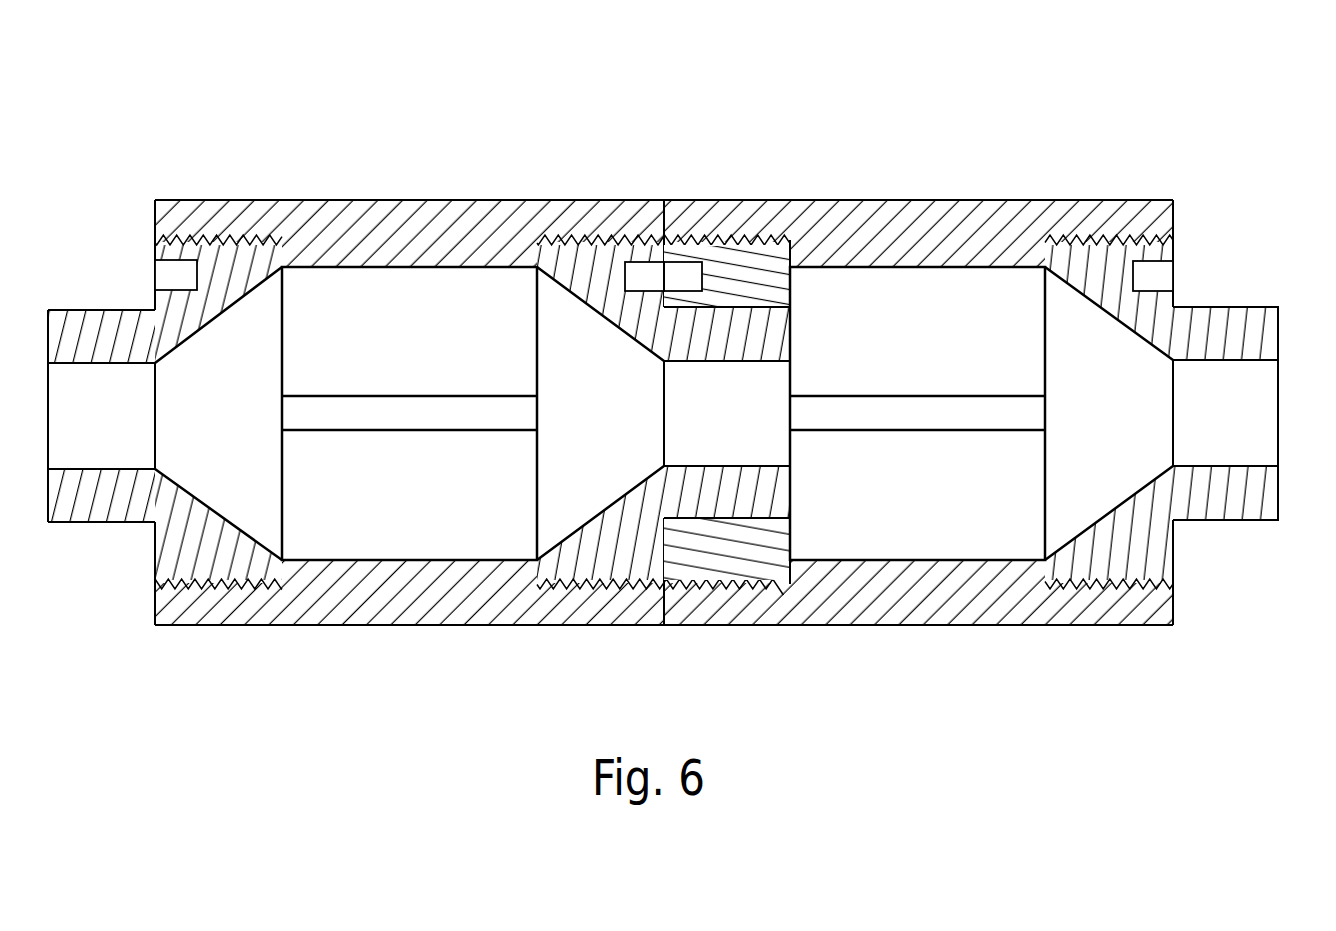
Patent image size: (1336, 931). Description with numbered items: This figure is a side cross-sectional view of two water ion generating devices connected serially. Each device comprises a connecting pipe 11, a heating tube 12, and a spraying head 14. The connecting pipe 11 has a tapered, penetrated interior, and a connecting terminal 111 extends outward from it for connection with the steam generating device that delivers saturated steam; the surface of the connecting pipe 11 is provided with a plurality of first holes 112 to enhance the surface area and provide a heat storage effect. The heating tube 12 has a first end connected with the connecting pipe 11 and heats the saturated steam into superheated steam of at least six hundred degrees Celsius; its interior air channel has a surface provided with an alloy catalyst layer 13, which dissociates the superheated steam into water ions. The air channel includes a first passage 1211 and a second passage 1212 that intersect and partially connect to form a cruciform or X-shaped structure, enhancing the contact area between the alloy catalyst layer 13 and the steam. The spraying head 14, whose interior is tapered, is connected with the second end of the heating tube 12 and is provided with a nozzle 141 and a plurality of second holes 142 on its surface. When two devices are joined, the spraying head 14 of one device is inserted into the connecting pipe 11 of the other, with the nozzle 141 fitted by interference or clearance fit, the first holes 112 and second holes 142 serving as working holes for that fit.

The connecting pipe 11 is at (212, 255).
The connecting terminal 111 is at (90, 318).
The first holes 112 is at (175, 278).
The heating tube 12 is at (663, 388).
The first passage 1211 is at (663, 553).
The second passage 1212 is at (383, 415).
The alloy catalyst layer 13 is at (243, 533).
The spraying head 14 is at (602, 260).
The nozzle 141 is at (768, 323).
The second holes 142 is at (642, 278).